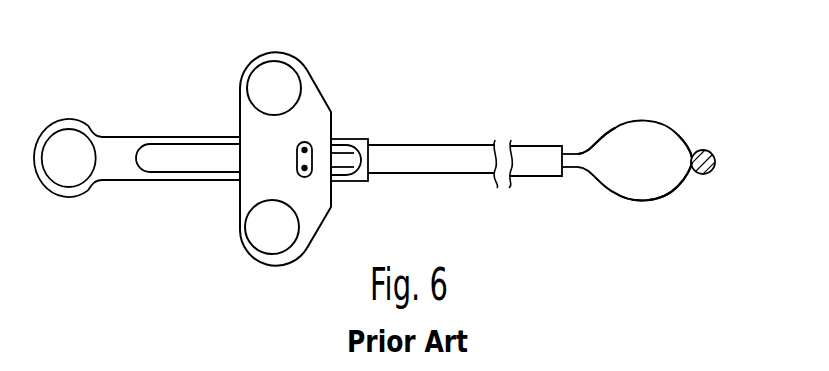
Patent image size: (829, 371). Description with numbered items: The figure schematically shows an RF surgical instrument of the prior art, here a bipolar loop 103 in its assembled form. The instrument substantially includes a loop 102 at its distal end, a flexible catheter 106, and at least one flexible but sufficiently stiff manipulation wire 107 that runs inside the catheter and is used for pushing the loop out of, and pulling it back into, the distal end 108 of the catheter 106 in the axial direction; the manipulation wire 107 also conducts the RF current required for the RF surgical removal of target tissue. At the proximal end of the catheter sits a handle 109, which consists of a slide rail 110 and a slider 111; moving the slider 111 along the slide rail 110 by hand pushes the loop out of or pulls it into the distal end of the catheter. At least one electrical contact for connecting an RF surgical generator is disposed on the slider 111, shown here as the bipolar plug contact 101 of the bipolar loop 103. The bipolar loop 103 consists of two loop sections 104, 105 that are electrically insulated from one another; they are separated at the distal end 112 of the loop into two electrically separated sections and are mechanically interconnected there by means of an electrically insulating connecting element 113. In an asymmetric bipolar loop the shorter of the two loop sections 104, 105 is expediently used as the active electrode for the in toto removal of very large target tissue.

The bipolar plug contact 101 is at (313, 157).
The loop 102 is at (640, 140).
The bipolar loop 103 is at (93, 88).
The first loop section 104 is at (610, 122).
The second loop section 105 is at (643, 205).
The flexible catheter 106 is at (432, 153).
The manipulation wire 107 is at (350, 157).
The distal end of the catheter 108 is at (550, 150).
The handle 109 is at (270, 83).
The slide rail 110 is at (167, 140).
The slider 111 is at (303, 115).
The distal end of the loop 112 is at (693, 150).
The electrically insulating connecting element 113 is at (717, 153).